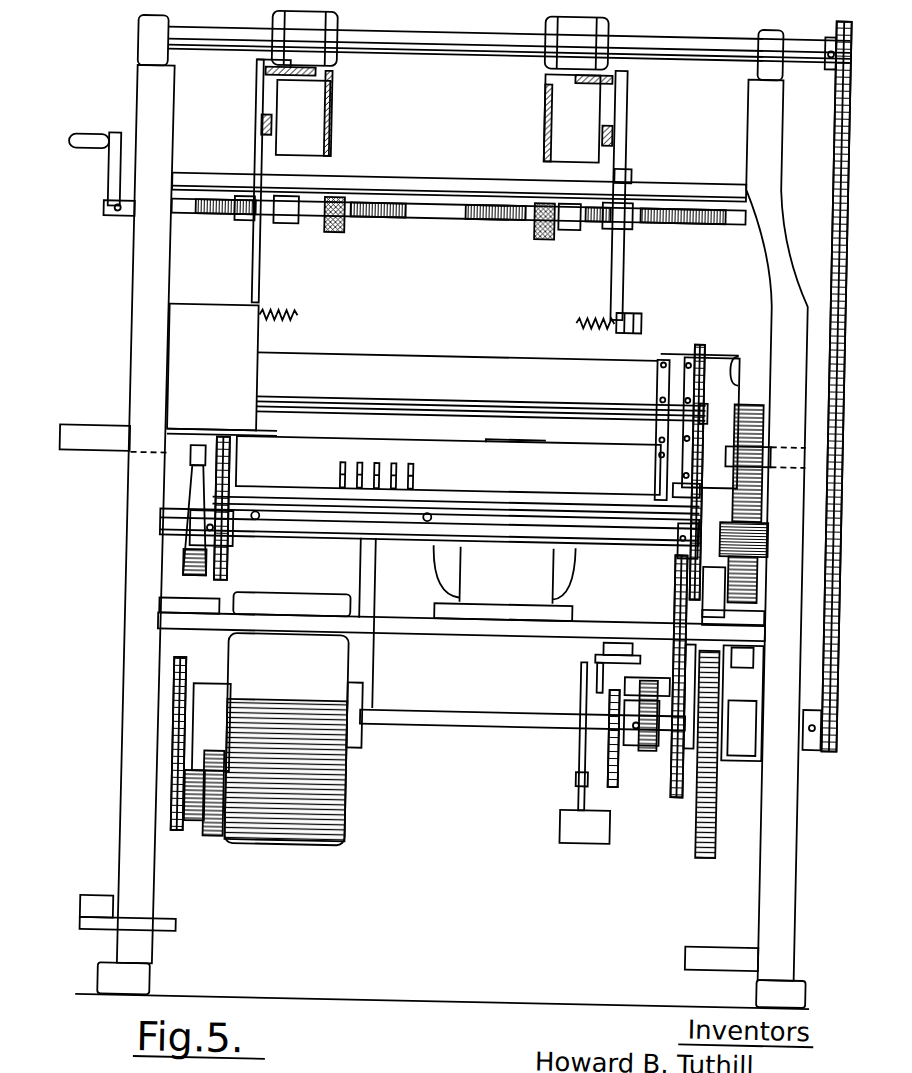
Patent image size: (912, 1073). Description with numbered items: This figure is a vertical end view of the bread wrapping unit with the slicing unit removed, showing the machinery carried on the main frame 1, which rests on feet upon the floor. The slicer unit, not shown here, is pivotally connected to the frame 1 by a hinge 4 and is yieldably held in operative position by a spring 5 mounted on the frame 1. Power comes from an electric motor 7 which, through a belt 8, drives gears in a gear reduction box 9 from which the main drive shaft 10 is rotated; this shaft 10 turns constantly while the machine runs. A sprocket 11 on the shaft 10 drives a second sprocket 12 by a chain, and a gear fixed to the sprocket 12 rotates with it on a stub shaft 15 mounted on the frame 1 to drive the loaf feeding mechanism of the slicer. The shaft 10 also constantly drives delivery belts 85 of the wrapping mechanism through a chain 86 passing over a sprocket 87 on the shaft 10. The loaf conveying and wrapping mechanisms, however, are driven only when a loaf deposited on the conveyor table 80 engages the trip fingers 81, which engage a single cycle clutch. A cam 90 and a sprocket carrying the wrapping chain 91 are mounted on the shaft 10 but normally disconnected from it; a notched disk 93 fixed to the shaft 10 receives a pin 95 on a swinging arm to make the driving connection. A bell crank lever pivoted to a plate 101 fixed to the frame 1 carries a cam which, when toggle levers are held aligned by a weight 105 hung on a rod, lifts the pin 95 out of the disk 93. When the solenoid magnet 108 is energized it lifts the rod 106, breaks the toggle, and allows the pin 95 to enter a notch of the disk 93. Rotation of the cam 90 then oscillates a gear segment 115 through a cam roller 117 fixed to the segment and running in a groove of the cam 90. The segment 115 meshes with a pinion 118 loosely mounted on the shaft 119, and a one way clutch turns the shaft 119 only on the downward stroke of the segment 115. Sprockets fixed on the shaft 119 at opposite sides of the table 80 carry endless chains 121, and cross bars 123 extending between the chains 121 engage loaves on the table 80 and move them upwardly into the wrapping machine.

The main frame 1 is at (154, 297).
The hinge 4 is at (109, 903).
The spring 5 is at (710, 944).
The electric motor 7 is at (462, 551).
The belt 8 is at (387, 557).
The gear reduction box 9 is at (328, 778).
The main drive shaft 10 is at (493, 708).
The sprocket 11 is at (192, 671).
The sprocket 12 is at (188, 807).
The stub shaft 15 is at (229, 831).
The conveyor table 80 is at (403, 359).
The trip fingers 81 is at (425, 463).
The delivery belts 85 is at (547, 104).
The chain 86 is at (846, 105).
The sprocket 87 is at (831, 735).
The cam 90 is at (729, 575).
The chain 91 is at (691, 771).
The notched disk 93 is at (664, 737).
The pin 95 is at (662, 667).
The plate 101 is at (601, 756).
The weight 105 is at (602, 816).
The rod 106 is at (600, 768).
The solenoid magnet 108 is at (604, 636).
The gear segment 115 is at (769, 412).
The cam roller 117 is at (752, 559).
The pinion 118 is at (776, 509).
The shaft 119 is at (639, 522).
The endless chains 121 is at (238, 457).
The cross bars 123 is at (437, 403).